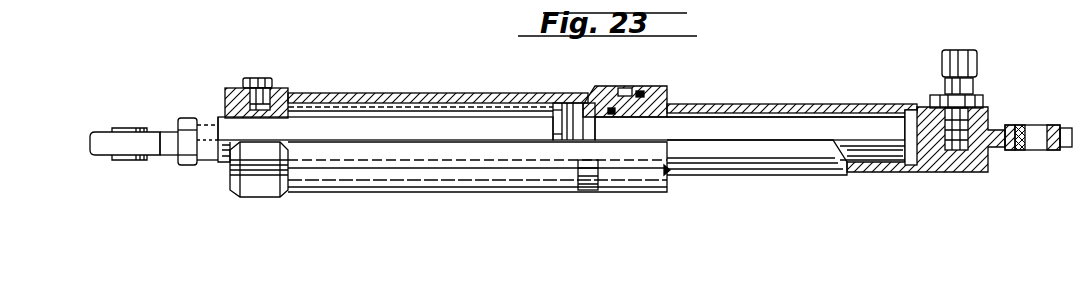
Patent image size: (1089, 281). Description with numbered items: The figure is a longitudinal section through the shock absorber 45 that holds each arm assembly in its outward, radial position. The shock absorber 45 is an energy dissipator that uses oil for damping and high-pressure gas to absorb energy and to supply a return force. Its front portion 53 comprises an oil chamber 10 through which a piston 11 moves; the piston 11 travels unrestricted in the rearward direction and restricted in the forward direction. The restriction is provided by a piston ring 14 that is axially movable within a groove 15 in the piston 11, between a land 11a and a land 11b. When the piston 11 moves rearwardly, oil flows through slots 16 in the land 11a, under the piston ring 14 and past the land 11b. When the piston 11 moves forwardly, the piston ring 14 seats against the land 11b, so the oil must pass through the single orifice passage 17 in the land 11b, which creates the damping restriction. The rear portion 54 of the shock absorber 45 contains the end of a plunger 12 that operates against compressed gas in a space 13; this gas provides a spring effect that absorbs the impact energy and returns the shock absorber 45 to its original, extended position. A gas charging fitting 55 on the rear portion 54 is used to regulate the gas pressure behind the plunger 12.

The oil chamber 10 is at (381, 94).
The piston 11 is at (545, 131).
The land 11a is at (556, 138).
The land 11b is at (581, 133).
The plunger 12 is at (863, 152).
The space 13 is at (912, 157).
The piston ring 14 is at (569, 104).
The groove 15 is at (570, 140).
The slots 16 is at (557, 105).
The orifice passage 17 is at (586, 93).
The shock absorber 45 is at (739, 95).
The front portion 53 is at (400, 178).
The rear portion 54 is at (777, 162).
The gas charging fitting 55 is at (978, 57).